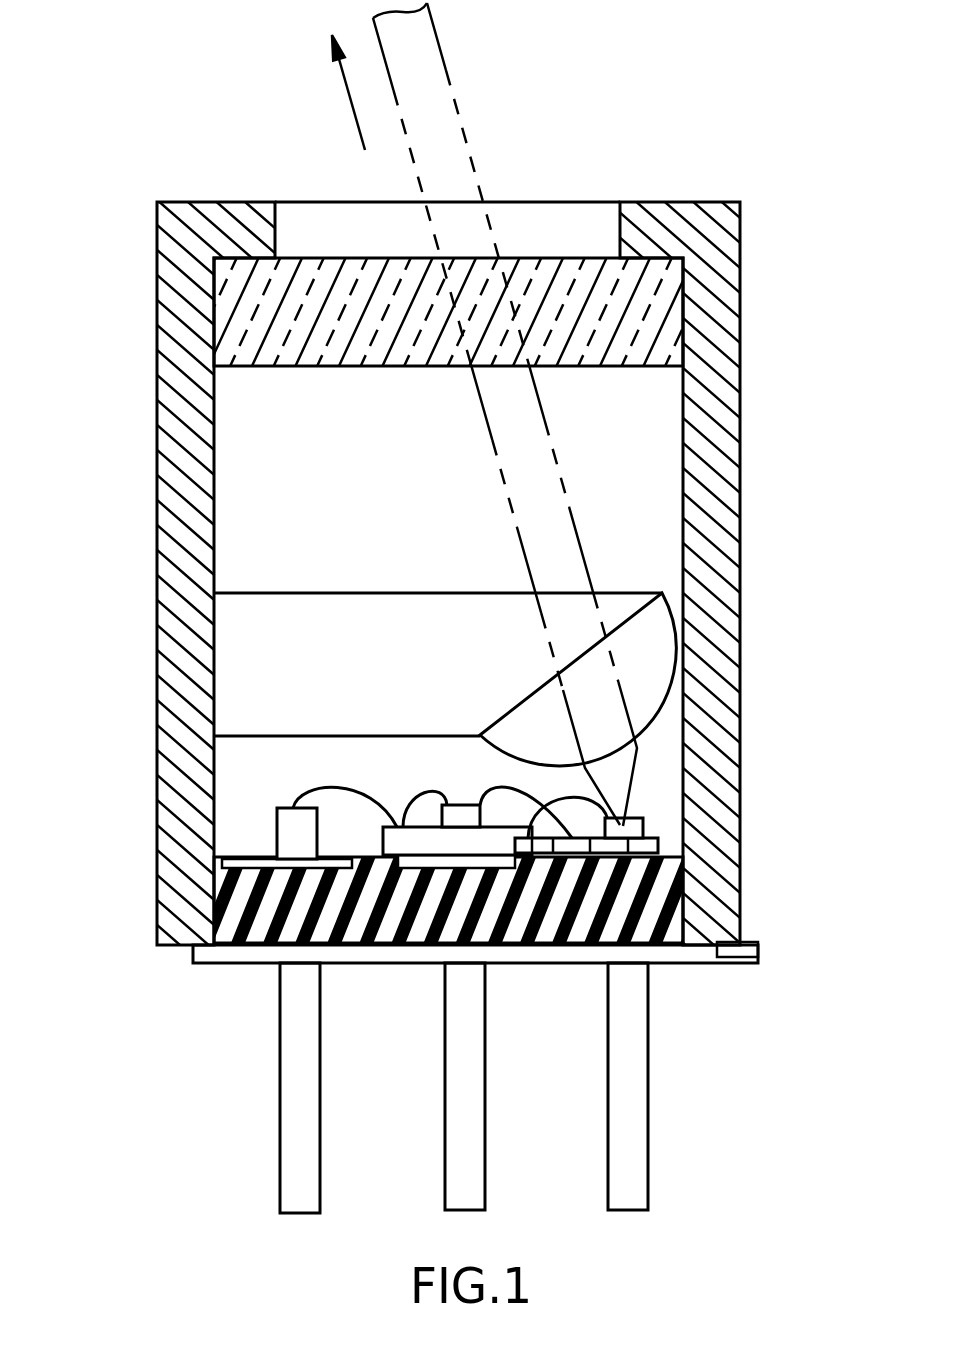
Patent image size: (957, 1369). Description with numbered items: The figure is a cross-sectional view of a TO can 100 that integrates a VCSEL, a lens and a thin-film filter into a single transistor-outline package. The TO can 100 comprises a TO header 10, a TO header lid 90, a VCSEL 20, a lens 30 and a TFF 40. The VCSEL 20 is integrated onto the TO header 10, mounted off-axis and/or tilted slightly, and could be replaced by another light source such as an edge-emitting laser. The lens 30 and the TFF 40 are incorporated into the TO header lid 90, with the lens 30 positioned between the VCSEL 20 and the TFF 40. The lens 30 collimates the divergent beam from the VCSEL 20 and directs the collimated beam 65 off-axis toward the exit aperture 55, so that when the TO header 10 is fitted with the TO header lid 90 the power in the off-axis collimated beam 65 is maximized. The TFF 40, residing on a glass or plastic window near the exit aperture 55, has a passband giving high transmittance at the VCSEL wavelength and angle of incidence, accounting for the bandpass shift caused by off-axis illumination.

The TO header 10 is at (272, 910).
The VCSEL 20 is at (643, 823).
The lens 30 is at (640, 652).
The TFF 40 is at (630, 290).
The exit aperture 55 is at (577, 222).
The collimated beam 65 is at (452, 187).
The TO header lid 90 is at (185, 332).
The TO can 100 is at (834, 1068).